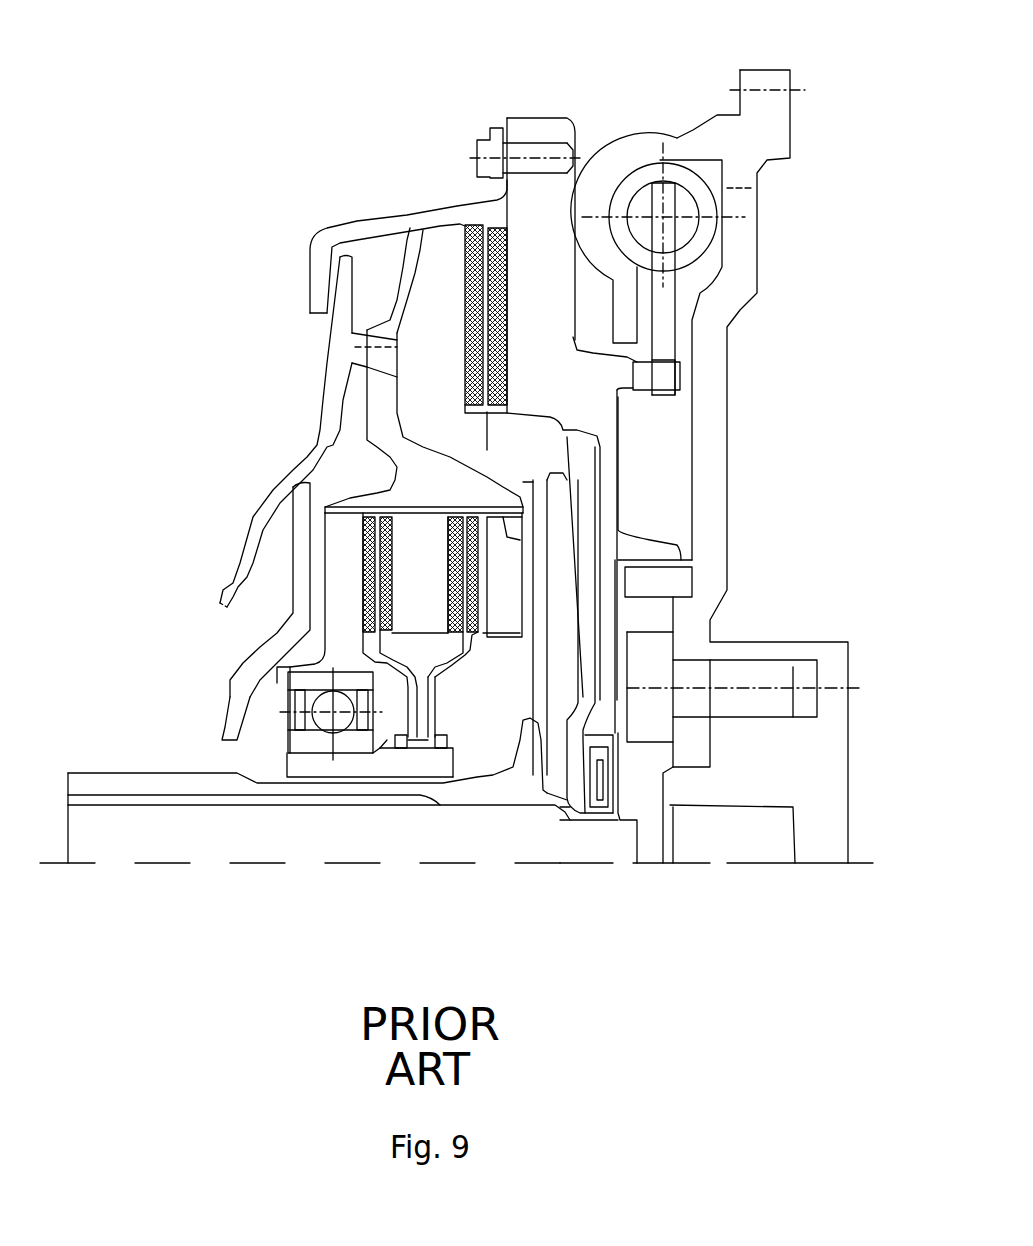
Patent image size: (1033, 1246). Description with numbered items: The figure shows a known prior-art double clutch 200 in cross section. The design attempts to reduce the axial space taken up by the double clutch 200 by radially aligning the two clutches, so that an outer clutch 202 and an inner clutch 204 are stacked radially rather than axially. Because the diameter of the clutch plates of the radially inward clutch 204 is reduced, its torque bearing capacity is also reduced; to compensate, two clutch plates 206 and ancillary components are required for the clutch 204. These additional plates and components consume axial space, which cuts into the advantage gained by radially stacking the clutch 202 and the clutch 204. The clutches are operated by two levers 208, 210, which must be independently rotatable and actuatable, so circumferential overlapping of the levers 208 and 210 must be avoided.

The double clutch 200 is at (236, 58).
The clutch 202 is at (384, 258).
The clutch 204 is at (290, 529).
The clutch plates 206 is at (363, 585).
The lever 208 is at (327, 362).
The lever 210 is at (232, 702).